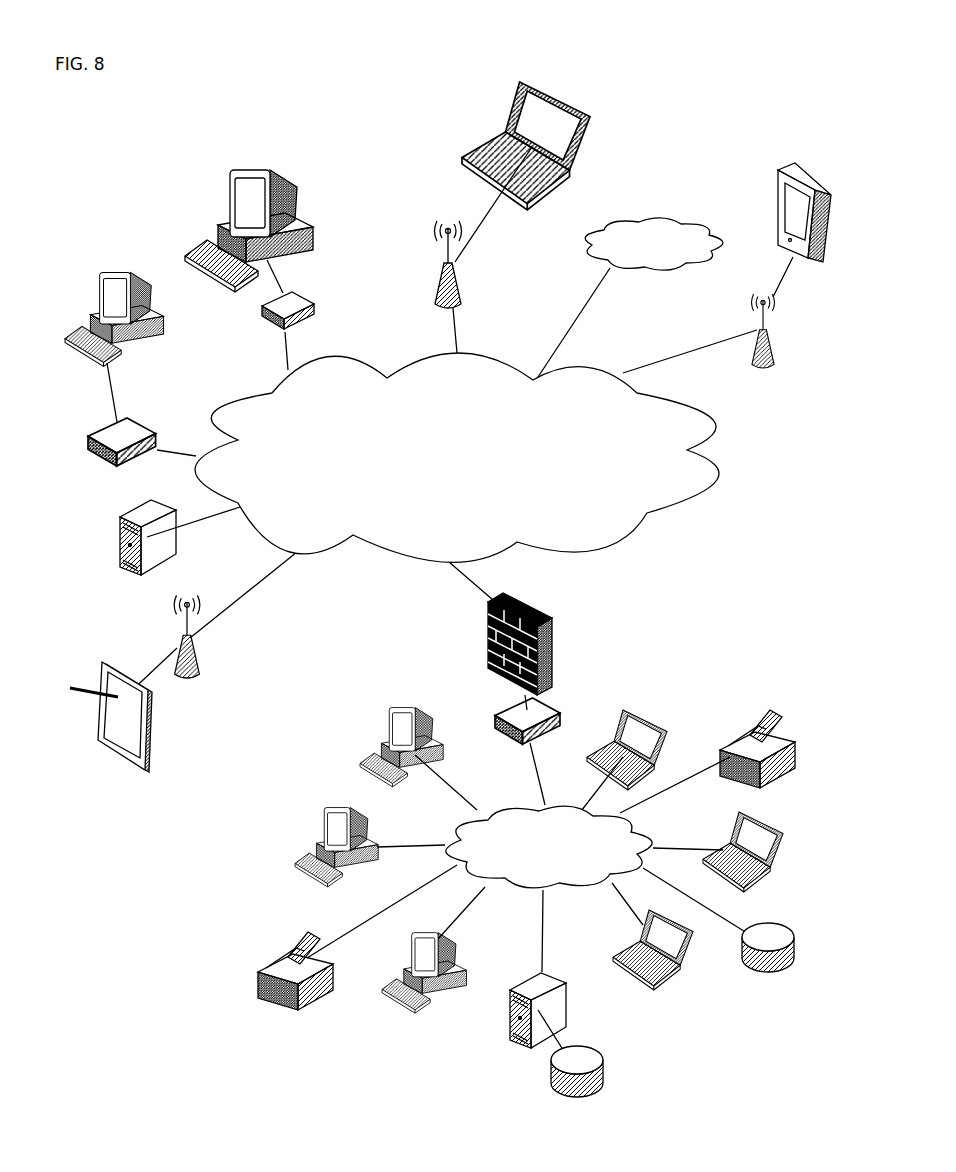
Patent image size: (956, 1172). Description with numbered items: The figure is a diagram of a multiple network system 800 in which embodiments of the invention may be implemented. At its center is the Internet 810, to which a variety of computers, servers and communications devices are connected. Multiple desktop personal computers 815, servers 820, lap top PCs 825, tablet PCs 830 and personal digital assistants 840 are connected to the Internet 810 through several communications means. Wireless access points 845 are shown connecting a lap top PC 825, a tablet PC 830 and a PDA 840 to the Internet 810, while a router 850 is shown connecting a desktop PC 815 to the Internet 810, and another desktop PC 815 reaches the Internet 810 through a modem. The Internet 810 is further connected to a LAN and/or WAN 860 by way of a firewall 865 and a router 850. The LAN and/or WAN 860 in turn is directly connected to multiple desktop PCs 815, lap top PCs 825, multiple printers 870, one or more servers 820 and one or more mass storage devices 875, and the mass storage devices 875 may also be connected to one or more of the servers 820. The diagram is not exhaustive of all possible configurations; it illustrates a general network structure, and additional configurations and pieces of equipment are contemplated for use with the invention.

The network environment 800 is at (335, 135).
The Internet 810 is at (110, 438).
The desktop personal computer 815 is at (240, 180).
The server 820 is at (140, 563).
The lap top PC 825 is at (467, 155).
The tablet PC 830 is at (130, 752).
The personal digital assistant 840 is at (778, 187).
The wireless access point 845 is at (447, 280).
The router 850 is at (265, 320).
The LAN and/or WAN 860 is at (593, 258).
The firewall 865 is at (487, 632).
The printer 870 is at (768, 732).
The mass storage device 875 is at (777, 937).